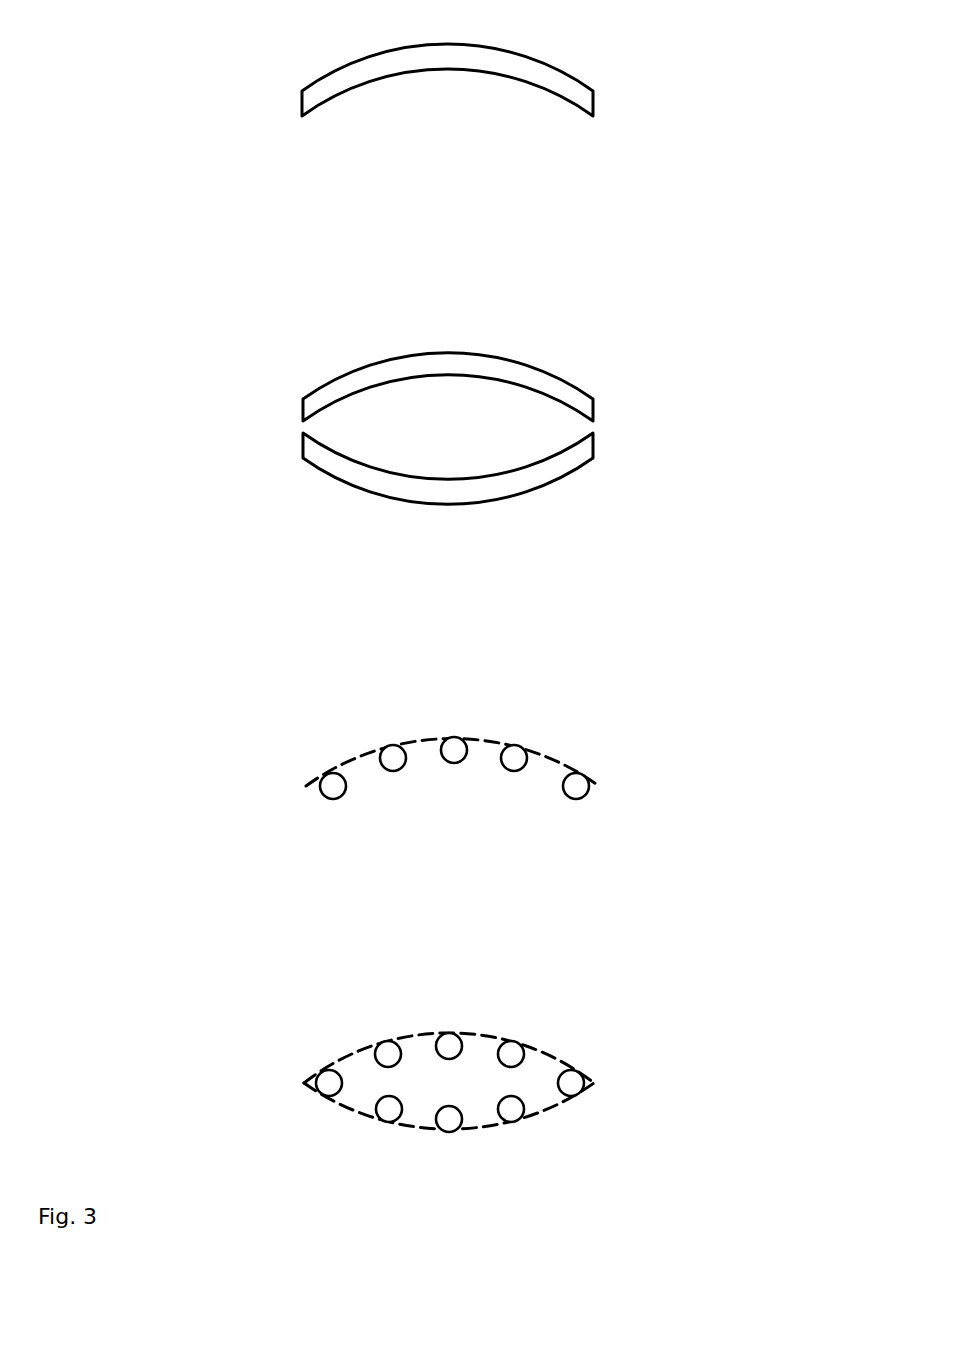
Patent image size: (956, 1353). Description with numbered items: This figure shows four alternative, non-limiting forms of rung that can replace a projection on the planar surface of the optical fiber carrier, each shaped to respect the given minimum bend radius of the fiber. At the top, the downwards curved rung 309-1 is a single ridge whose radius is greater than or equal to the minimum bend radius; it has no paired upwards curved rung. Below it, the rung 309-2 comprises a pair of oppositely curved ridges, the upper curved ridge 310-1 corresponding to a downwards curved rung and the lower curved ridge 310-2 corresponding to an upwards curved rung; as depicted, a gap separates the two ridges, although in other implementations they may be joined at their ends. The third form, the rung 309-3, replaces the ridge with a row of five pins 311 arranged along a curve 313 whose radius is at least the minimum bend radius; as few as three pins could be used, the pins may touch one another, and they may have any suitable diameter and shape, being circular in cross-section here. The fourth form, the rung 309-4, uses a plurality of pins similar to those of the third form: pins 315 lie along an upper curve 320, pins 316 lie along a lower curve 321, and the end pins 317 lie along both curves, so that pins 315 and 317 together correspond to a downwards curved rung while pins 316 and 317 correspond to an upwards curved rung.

The downwards curved rung 309-1 is at (298, 50).
The rung 309-2 is at (402, 412).
The upper curved ridge 310-1 is at (455, 362).
The lower curved ridge 310-2 is at (420, 492).
The rung 309-3 is at (421, 760).
The pins 311 is at (563, 788).
The curve 313 is at (483, 740).
The rung 309-4 is at (445, 1087).
The pins 315 is at (507, 1052).
The pins 316 is at (507, 1120).
The pins 317 is at (322, 1082).
The upper curved surface 320 is at (482, 1033).
The upper curve 321 is at (372, 1117).